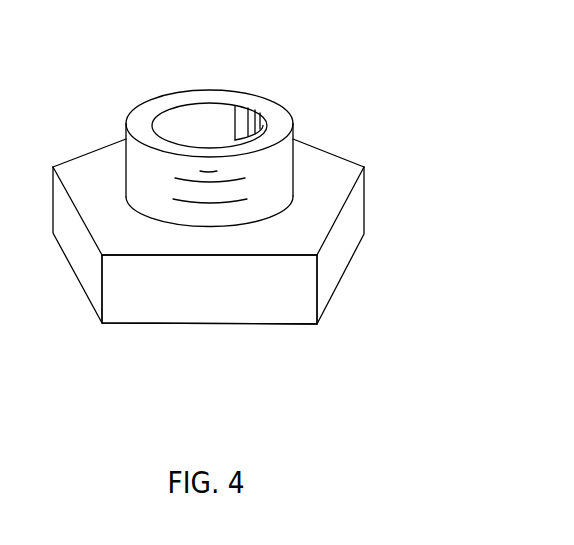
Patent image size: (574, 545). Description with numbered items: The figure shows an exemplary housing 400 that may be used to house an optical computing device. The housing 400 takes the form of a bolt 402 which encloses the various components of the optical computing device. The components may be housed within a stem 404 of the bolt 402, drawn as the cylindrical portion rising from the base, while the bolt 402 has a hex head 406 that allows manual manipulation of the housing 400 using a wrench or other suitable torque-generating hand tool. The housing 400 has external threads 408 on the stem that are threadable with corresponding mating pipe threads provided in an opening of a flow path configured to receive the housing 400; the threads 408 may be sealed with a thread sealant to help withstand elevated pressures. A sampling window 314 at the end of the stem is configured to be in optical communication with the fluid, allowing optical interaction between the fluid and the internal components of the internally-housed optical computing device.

The sampling window 314 is at (210, 120).
The housing 400 is at (313, 72).
The bolt 402 is at (366, 235).
The stem 404 is at (283, 165).
The hex head 406 is at (205, 310).
The external threads 408 is at (215, 192).